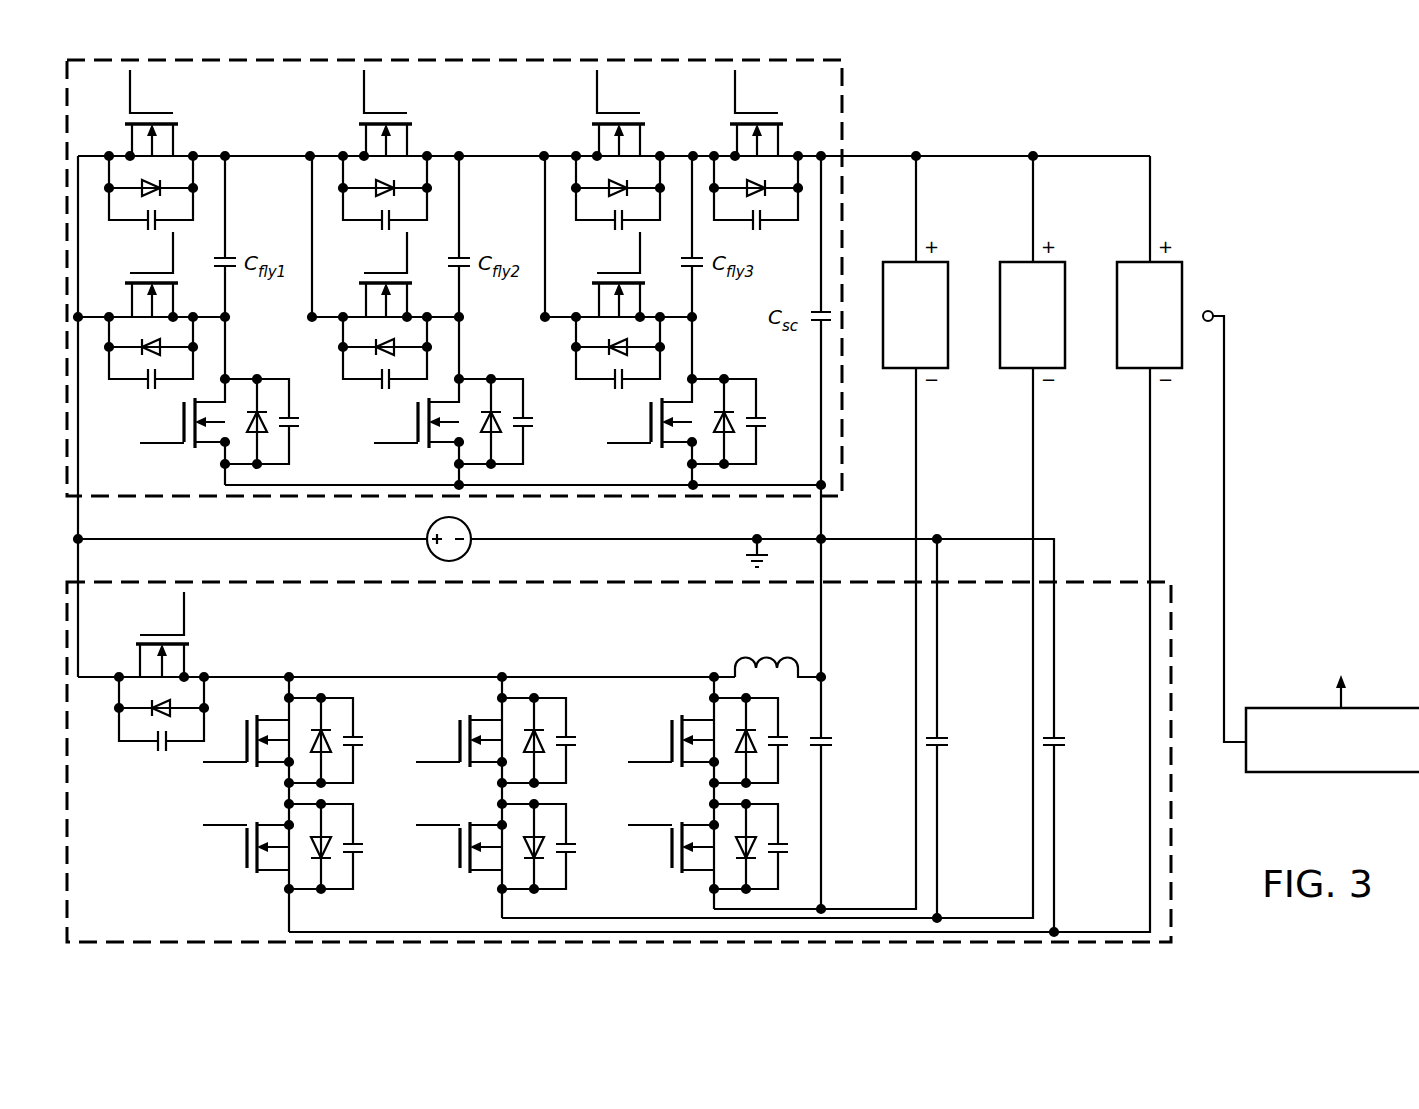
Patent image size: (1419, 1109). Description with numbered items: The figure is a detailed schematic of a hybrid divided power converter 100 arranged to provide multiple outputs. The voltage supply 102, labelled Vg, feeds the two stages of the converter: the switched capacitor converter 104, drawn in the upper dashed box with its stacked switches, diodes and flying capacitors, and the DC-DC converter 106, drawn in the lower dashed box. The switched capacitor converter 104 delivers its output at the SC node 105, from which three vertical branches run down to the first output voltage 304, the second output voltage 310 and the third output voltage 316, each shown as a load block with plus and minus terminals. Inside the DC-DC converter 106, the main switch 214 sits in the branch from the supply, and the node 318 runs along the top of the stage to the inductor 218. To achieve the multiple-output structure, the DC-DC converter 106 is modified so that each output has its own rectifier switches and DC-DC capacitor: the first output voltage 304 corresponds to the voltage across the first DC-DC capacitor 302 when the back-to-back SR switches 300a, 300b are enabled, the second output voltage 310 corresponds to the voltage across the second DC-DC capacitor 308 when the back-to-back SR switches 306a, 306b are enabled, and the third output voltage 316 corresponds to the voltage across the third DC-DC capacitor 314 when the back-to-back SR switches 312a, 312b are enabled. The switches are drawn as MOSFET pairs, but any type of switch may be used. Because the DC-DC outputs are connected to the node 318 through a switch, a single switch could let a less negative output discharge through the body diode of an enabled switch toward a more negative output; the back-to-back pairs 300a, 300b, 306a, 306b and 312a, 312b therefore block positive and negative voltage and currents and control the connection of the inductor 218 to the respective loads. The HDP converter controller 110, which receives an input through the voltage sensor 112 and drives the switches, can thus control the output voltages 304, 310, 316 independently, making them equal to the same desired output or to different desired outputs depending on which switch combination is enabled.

The hybrid divided power (HDP) converter 100 is at (1316, 120).
The voltage supply 102 is at (428, 547).
The switched capacitor converter 104 is at (850, 85).
The SC node 105 is at (878, 155).
The DC-DC converter 106 is at (1181, 790).
The HDP converter controller 110 is at (1352, 773).
The voltage sensor 112 is at (1209, 310).
The main switch 214 is at (169, 611).
The inductor 218 is at (740, 665).
The back-to-back SR switch 300a is at (654, 726).
The back-to-back SR switch 300b is at (655, 861).
The first DC-DC capacitor 302 is at (826, 751).
The first output voltage 304 is at (937, 348).
The back-to-back SR switch 306a is at (442, 726).
The back-to-back SR switch 306b is at (443, 861).
The second DC-DC capacitor 308 is at (943, 751).
The second output voltage 310 is at (1054, 348).
The back-to-back SR switch 312a is at (229, 748).
The back-to-back SR switch 312b is at (229, 858).
The third DC-DC capacitor 314 is at (1060, 751).
The third output voltage 316 is at (1171, 348).
The node 318 is at (353, 675).